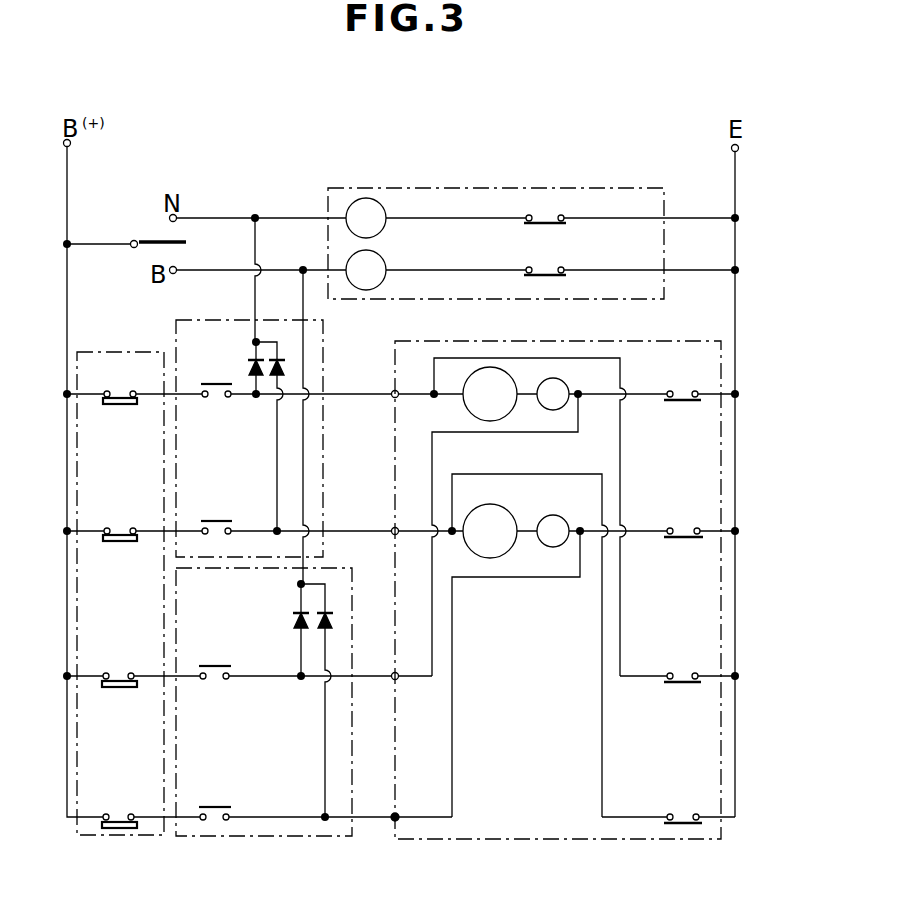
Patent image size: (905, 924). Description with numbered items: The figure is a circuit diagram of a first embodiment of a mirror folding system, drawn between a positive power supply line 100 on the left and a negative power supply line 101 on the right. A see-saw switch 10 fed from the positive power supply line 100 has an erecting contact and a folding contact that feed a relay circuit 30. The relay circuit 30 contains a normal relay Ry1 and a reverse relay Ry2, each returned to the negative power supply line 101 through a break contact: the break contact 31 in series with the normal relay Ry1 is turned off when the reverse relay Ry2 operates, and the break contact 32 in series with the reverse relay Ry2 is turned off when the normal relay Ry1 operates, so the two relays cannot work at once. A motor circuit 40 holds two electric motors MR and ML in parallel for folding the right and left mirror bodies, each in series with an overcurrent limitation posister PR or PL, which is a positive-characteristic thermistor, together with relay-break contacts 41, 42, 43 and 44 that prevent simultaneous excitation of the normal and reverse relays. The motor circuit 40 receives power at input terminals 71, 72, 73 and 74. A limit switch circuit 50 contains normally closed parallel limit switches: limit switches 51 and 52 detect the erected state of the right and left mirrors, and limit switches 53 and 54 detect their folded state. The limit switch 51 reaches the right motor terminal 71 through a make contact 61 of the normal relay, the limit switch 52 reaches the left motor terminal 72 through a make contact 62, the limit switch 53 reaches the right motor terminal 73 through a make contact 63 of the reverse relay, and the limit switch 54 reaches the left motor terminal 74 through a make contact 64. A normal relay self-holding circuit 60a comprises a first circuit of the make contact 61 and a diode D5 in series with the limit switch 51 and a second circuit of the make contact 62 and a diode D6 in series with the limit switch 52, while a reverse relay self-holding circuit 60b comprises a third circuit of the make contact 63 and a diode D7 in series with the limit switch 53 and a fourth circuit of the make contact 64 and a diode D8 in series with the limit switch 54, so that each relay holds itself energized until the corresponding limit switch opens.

The see-saw switch 10 is at (153, 241).
The relay circuit 30 is at (471, 191).
The break contact 31 is at (629, 205).
The break contact 32 is at (629, 257).
The motor circuit 40 is at (606, 842).
The relay-break contact 41 is at (682, 414).
The relay-break contact 42 is at (683, 516).
The relay-break contact 43 is at (682, 663).
The relay-break contact 44 is at (683, 803).
The limit switch circuit 50 is at (128, 838).
The limit switch 51 is at (120, 414).
The limit switch 52 is at (119, 553).
The limit switch 53 is at (119, 695).
The limit switch 54 is at (119, 804).
The normal relay self-holding circuit 60a is at (325, 491).
The reverse relay self-holding circuit 60b is at (290, 838).
The make contact 61 is at (218, 409).
The make contact 62 is at (218, 511).
The make contact 63 is at (214, 656).
The make contact 64 is at (214, 797).
The input terminal 71 is at (233, 381).
The input terminal 72 is at (233, 516).
The input terminal 73 is at (233, 661).
The input terminal 74 is at (266, 802).
The positive power supply line 100 is at (70, 311).
The negative power supply line 101 is at (735, 305).
The diode D5 is at (243, 363).
The diode D6 is at (288, 351).
The diode D7 is at (285, 630).
The diode D8 is at (333, 612).
The normal relay Ry1 is at (393, 208).
The reverse relay Ry2 is at (393, 260).
The electric motor MR is at (490, 394).
The electric motor ML is at (490, 531).
The overcurrent limitation posister PR is at (565, 383).
The overcurrent limitation posister PL is at (546, 524).